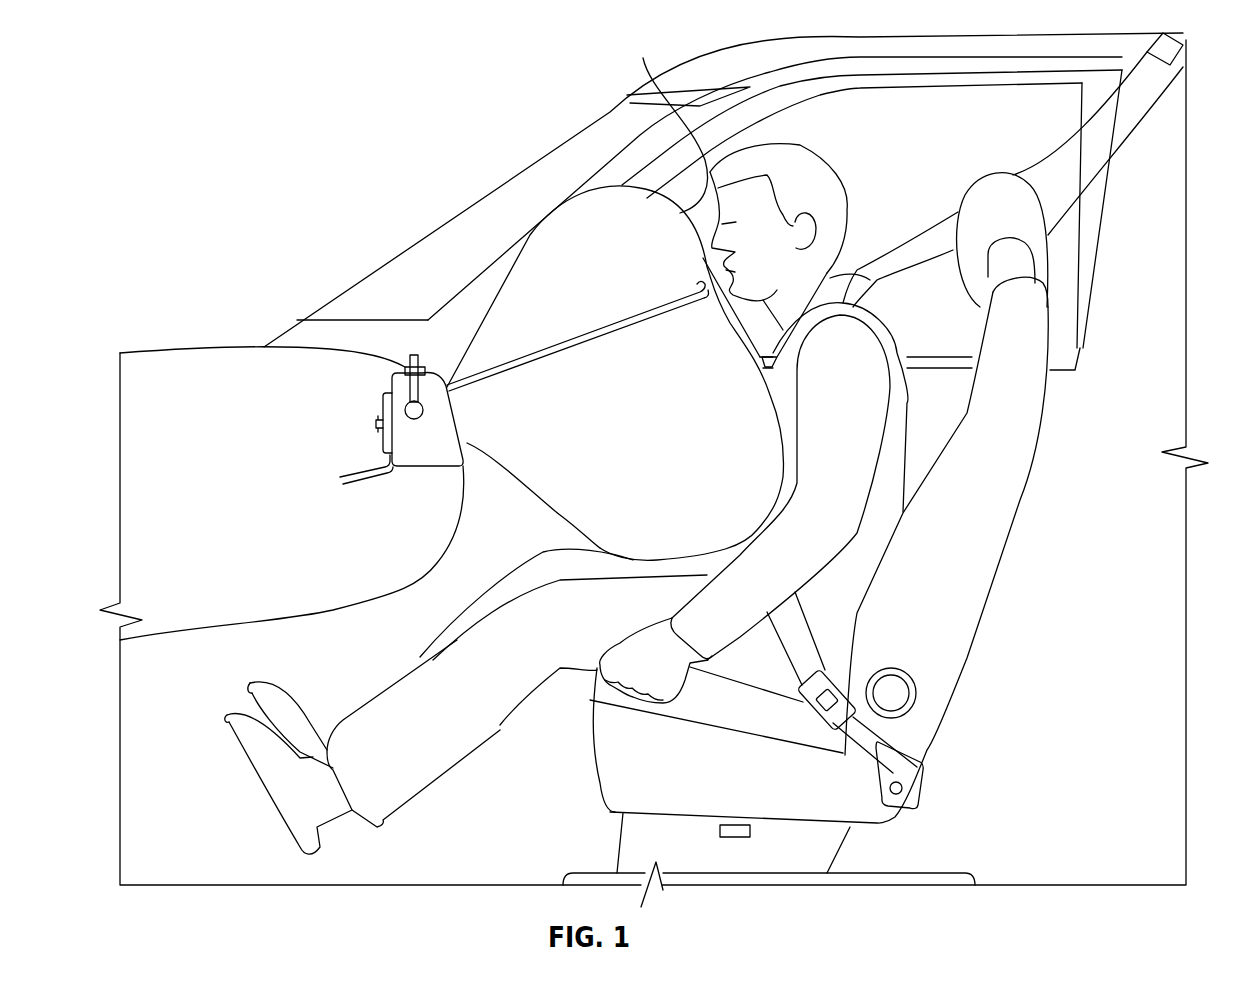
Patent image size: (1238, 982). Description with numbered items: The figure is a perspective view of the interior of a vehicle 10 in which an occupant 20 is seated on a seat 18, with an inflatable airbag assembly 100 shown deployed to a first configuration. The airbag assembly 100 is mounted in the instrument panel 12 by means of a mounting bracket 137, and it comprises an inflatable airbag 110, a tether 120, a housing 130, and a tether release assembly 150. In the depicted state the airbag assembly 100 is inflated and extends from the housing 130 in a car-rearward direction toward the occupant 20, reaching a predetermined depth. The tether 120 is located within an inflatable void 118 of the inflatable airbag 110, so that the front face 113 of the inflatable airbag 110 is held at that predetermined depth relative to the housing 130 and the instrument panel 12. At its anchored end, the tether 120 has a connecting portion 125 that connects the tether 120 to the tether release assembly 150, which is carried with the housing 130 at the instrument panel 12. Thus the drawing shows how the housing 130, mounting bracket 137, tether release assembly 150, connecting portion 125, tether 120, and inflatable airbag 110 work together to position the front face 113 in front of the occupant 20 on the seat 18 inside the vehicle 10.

The vehicle 10 is at (180, 92).
The instrument panel 12 is at (359, 579).
The seat 18 is at (997, 530).
The occupant 20 is at (837, 332).
The airbag assembly 100 is at (370, 336).
The inflatable airbag 110 is at (553, 237).
The front face 113 is at (669, 121).
The inflatable void 118 is at (712, 358).
The tether 120 is at (578, 343).
The connecting portion 125 is at (377, 423).
The housing 130 is at (355, 398).
The mounting bracket 137 is at (340, 477).
The tether release assembly 150 is at (403, 367).